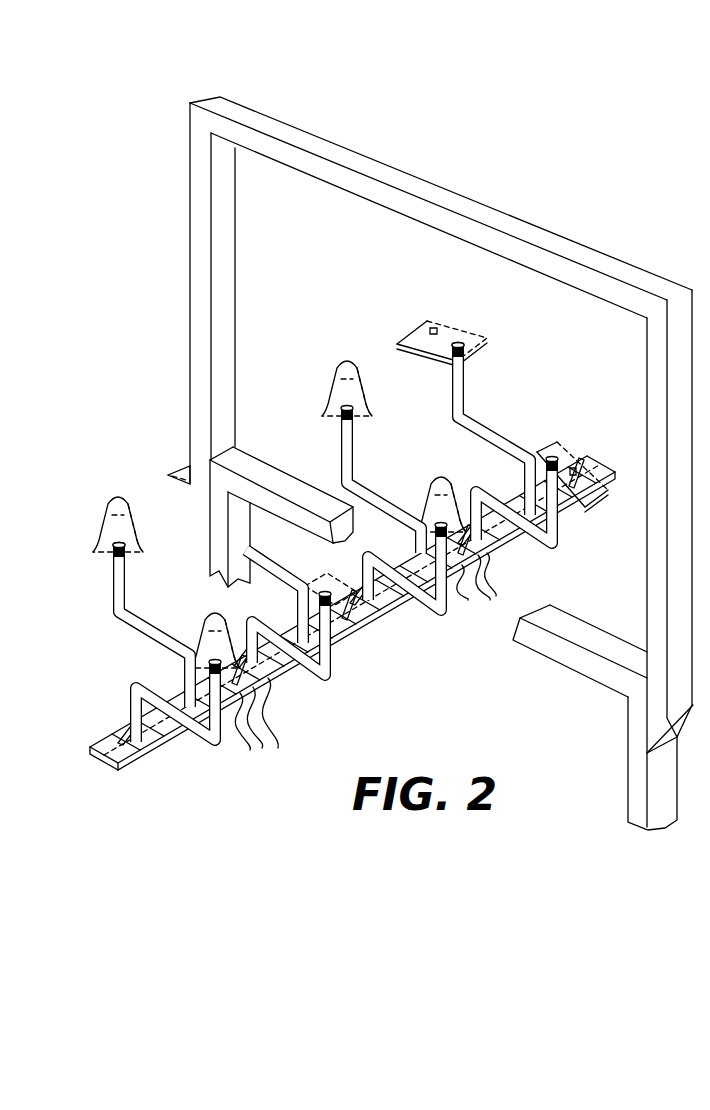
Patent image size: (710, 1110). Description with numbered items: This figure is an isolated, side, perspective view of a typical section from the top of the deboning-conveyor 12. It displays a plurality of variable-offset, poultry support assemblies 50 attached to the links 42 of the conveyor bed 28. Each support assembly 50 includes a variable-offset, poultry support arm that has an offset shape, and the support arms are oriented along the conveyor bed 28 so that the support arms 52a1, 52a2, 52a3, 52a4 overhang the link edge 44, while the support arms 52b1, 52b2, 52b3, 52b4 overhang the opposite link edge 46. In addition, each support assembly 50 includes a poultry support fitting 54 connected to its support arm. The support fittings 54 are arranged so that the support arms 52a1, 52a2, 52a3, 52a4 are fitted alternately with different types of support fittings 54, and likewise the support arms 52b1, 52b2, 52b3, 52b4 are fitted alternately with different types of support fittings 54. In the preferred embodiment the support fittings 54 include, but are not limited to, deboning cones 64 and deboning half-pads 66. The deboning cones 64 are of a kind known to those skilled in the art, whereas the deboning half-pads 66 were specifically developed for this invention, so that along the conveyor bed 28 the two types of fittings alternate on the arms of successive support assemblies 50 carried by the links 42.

The deboning-conveyor 12 is at (336, 653).
The conveyor bed 28 is at (336, 653).
The links 42 is at (255, 740).
The link edge 44 is at (138, 770).
The opposite link edge 46 is at (123, 733).
The variable-offset poultry support assembly 50 is at (112, 597).
The support arm 52a1 is at (222, 735).
The support arm 52a2 is at (330, 660).
The support arm 52a3 is at (450, 600).
The support arm 52a4 is at (553, 527).
The support arm 52b1 is at (157, 640).
The support arm 52b2 is at (237, 600).
The support arm 52b3 is at (345, 455).
The support arm 52b4 is at (493, 437).
The poultry support fitting 54 is at (450, 314).
The deboning cone 64 is at (103, 533).
The deboning half-pad 66 is at (410, 334).